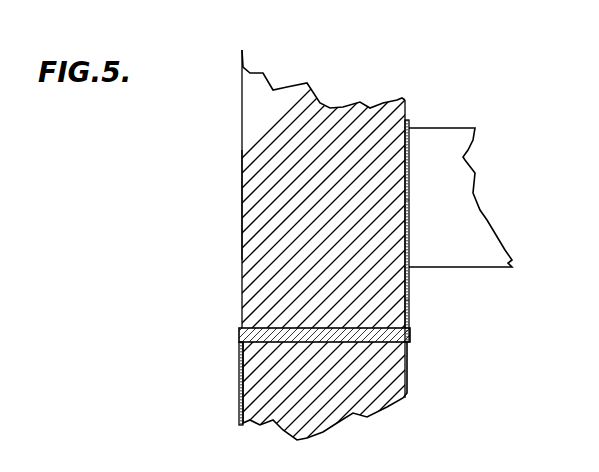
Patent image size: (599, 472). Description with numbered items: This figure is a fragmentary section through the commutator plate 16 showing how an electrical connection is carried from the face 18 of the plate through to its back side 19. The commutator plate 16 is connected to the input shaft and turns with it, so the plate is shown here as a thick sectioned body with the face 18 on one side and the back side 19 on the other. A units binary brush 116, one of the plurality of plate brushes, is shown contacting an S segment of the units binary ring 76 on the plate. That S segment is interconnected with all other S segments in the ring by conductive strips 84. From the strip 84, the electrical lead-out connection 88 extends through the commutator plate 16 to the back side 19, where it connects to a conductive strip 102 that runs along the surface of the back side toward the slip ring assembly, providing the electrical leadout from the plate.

The commutator plate 16 is at (313, 76).
The back side 19 is at (242, 198).
The units binary ring 76 is at (409, 122).
The conductive strips 84 is at (410, 293).
The units binary brush 116 is at (453, 130).
The electrical lead-out connection 88 is at (410, 335).
The conductive strip 102 is at (240, 375).
The face 18 is at (410, 380).